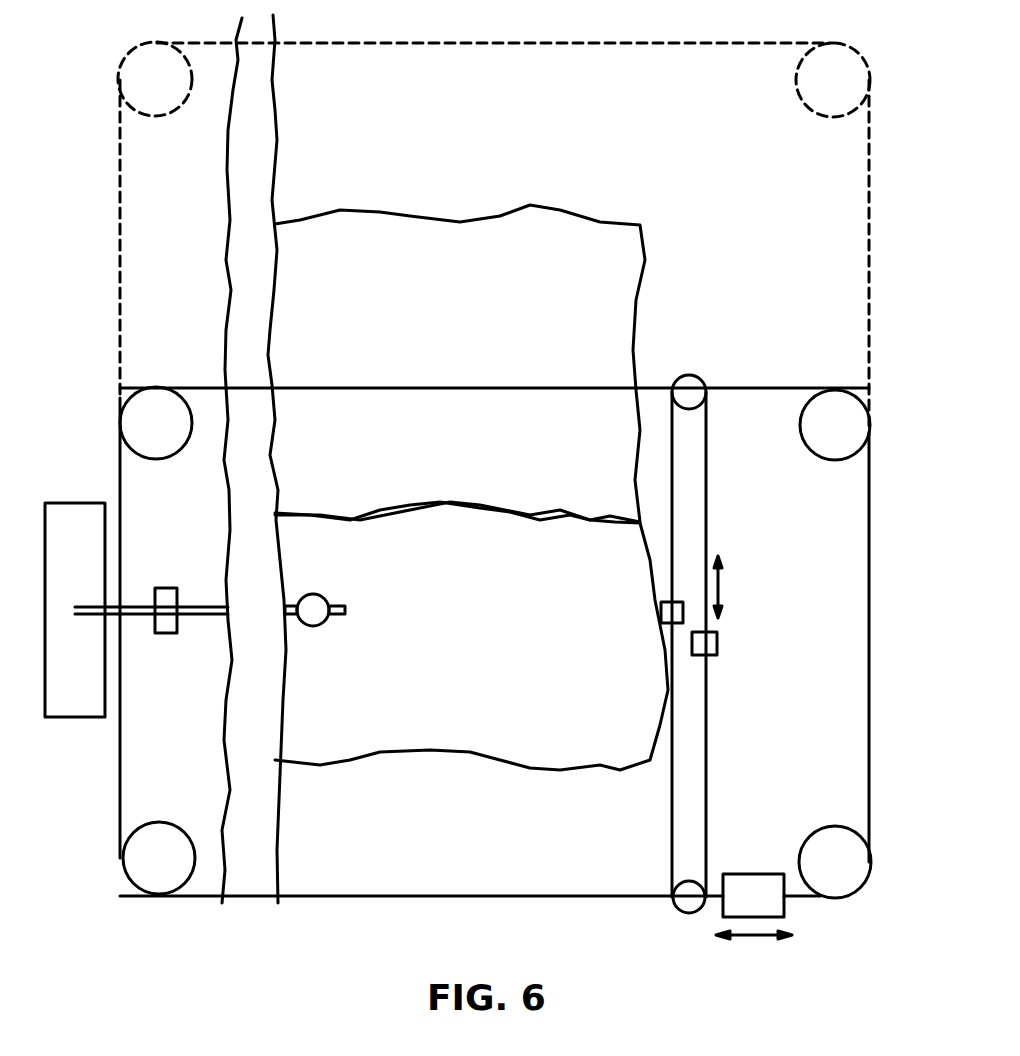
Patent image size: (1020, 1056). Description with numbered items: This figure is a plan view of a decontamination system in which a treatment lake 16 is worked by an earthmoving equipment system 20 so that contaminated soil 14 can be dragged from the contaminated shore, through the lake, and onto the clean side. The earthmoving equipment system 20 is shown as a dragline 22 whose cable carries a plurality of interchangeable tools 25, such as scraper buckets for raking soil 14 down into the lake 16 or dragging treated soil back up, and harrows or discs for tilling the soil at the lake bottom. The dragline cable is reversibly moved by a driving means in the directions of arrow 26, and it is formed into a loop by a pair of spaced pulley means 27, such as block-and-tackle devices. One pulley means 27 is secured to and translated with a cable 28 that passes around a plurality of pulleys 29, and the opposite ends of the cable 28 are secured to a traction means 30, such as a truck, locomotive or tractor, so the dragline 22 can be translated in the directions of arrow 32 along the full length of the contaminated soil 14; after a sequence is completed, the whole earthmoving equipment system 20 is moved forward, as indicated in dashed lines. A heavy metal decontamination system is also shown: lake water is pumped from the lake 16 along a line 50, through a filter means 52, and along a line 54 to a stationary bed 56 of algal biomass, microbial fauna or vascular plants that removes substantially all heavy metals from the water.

The contaminated soil 14 is at (469, 338).
The lake 16 is at (474, 685).
The earthmoving equipment system 20 is at (875, 632).
The dragline 22 is at (712, 665).
The interchangeable tools 25 is at (664, 609).
The arrow 26 is at (722, 590).
The pulley means 27 is at (690, 384).
The cable 28 is at (554, 898).
The pulleys 29 is at (136, 403).
The traction means 30 is at (776, 900).
The arrow 32 is at (757, 940).
The line 50 is at (288, 600).
The filter means 52 is at (178, 590).
The line 54 is at (135, 610).
The stationary bed 56 is at (90, 580).